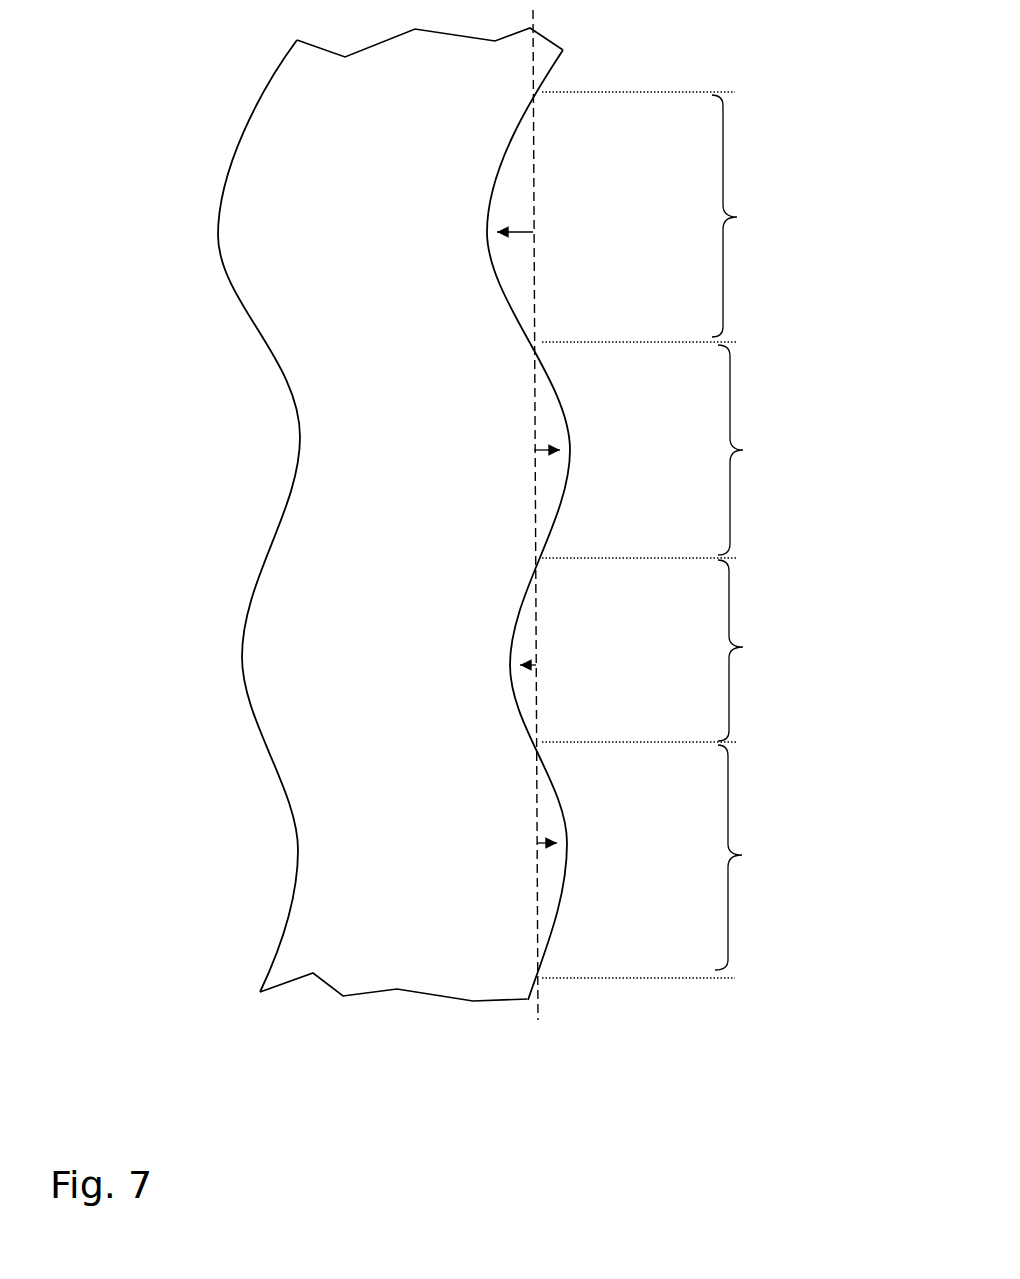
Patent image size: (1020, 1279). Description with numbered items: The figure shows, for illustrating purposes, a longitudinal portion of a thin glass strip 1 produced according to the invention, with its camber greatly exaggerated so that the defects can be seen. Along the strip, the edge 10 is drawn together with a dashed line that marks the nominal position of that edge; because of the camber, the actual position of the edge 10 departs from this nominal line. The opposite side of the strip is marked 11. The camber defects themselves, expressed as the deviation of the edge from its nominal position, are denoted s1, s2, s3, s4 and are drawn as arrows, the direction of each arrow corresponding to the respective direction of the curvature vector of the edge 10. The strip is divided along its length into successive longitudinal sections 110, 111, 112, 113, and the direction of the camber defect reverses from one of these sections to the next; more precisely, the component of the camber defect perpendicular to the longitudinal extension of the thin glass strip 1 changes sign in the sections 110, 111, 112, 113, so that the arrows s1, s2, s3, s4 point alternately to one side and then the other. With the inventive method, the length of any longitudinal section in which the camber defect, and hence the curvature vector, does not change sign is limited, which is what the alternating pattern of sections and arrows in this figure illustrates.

The thin glass strip 1 is at (196, 517).
The edge 10 is at (547, 83).
The opposite edge 11 is at (245, 322).
The longitudinal section 110 is at (769, 216).
The longitudinal section 111 is at (771, 450).
The longitudinal section 112 is at (772, 650).
The longitudinal section 113 is at (772, 857).
The camber defect s1 is at (508, 230).
The camber defect s2 is at (547, 447).
The camber defect s3 is at (530, 660).
The camber defect s4 is at (567, 832).